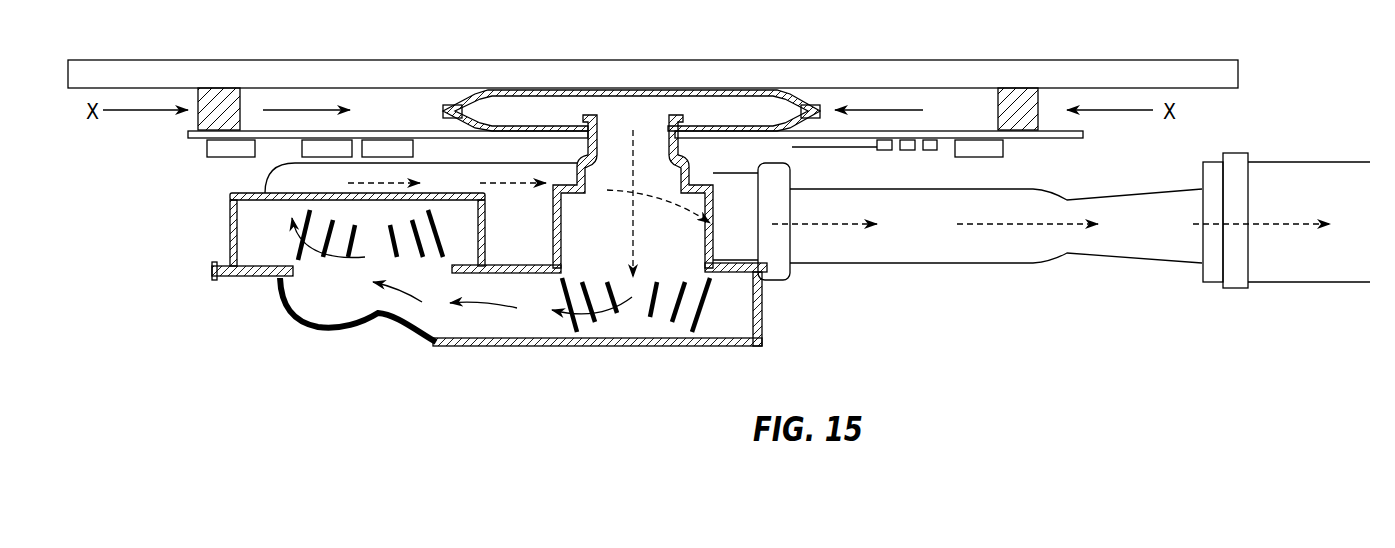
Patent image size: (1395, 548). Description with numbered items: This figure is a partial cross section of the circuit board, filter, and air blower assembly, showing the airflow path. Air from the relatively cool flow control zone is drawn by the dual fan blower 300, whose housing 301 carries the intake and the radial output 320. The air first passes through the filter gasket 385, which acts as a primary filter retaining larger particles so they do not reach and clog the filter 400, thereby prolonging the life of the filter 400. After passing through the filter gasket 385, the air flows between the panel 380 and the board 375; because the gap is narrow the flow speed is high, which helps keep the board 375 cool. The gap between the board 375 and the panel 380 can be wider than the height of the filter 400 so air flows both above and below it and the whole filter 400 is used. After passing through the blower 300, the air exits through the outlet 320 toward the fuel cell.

The dual fan blower 300 is at (445, 270).
The housing 301 is at (257, 280).
The radial output 320 is at (885, 262).
The board 375 is at (1082, 133).
The panel 380 is at (835, 73).
The filter gasket 385 is at (210, 100).
The filter 400 is at (463, 107).